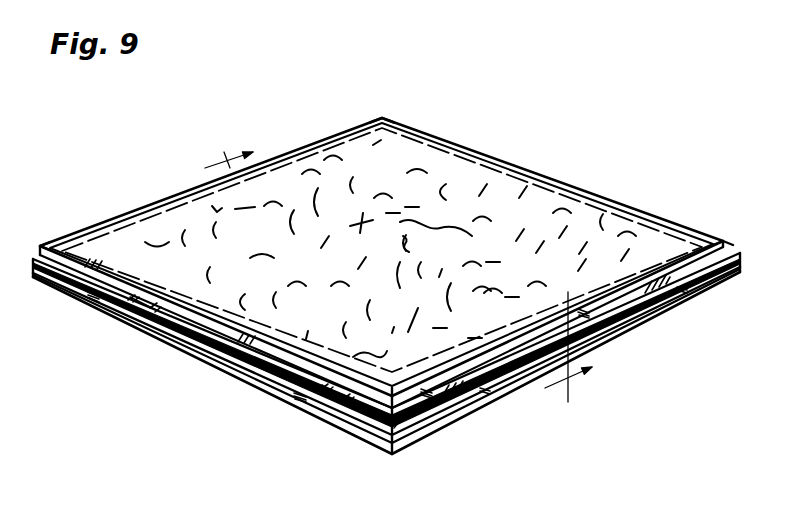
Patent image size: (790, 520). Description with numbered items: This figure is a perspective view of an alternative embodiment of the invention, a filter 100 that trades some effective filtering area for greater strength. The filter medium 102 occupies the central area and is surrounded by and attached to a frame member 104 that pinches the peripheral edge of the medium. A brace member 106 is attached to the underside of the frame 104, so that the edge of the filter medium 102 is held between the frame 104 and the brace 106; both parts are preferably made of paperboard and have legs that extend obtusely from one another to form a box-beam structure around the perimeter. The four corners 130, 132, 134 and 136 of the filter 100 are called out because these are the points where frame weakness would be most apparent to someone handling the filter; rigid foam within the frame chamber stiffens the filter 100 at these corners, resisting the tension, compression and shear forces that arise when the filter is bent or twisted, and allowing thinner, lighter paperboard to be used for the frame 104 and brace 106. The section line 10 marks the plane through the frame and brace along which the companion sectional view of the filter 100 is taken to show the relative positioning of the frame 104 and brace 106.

The filter 100 is at (480, 442).
The filter medium 102 is at (498, 197).
The frame member 104 is at (265, 363).
The brace member 106 is at (337, 427).
The corner 130 is at (733, 243).
The corner 132 is at (385, 112).
The corner 134 is at (40, 246).
The corner 136 is at (400, 423).
The section line 10- 10 is at (413, 263).